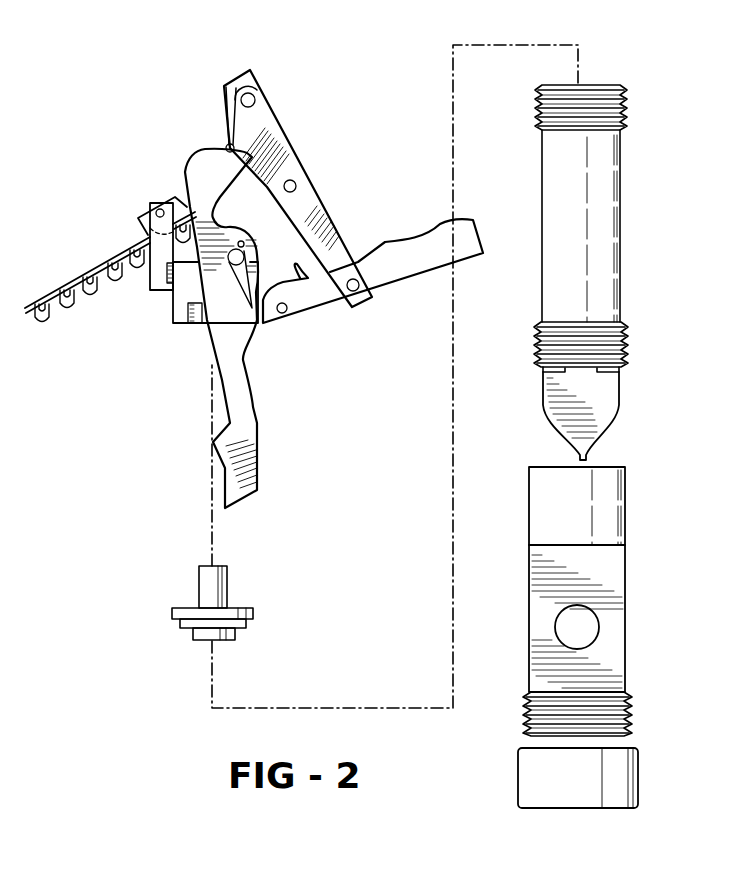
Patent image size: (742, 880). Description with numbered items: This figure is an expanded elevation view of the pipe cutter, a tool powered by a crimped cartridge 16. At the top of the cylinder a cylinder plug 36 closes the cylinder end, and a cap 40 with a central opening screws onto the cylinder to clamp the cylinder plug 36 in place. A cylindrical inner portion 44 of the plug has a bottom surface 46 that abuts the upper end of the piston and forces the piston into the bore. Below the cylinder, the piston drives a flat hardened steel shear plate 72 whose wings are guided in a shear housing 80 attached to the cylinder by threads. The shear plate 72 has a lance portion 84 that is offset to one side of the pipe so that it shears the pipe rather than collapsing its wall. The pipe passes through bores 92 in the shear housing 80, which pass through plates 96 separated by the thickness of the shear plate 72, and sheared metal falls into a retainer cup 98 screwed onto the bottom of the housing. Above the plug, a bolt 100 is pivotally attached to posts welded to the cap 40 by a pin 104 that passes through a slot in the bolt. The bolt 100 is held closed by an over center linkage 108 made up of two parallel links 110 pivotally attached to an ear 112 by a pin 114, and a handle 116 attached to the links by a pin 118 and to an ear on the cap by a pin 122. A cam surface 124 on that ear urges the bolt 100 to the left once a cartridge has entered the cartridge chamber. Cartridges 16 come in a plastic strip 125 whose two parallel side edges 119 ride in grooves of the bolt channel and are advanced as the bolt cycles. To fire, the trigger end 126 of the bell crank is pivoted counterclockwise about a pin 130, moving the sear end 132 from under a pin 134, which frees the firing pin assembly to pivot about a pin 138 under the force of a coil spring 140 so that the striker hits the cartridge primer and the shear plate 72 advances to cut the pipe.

The crimped cartridge 16 is at (110, 292).
The cylinder plug 36 is at (172, 613).
The cap 40 is at (173, 327).
The cylindrical inner portion 44 is at (235, 630).
The bottom surface 46 is at (198, 640).
The shear plate 72 is at (612, 392).
The shear housing 80 is at (625, 682).
The lance portion 84 is at (587, 453).
The bores 92 is at (563, 623).
The plates 96 is at (612, 565).
The retainer cup 98 is at (525, 787).
The bolt 100 is at (178, 200).
The pin 104 is at (152, 197).
The over center linkage 108 is at (380, 183).
The parallel links 110 is at (358, 262).
The ear 112 is at (295, 148).
The pin 114 is at (298, 182).
The handle 116 is at (423, 272).
The pin 118 is at (356, 290).
The side edges 119 is at (98, 270).
The pin 122 is at (284, 314).
The cam surface 124 is at (318, 235).
The plastic strip 125 is at (70, 310).
The trigger end 126 is at (258, 460).
The pin 130 is at (240, 248).
The sear end 132 is at (200, 150).
The pin 134 is at (222, 150).
The pin 138 is at (255, 97).
The coil spring 140 is at (228, 143).